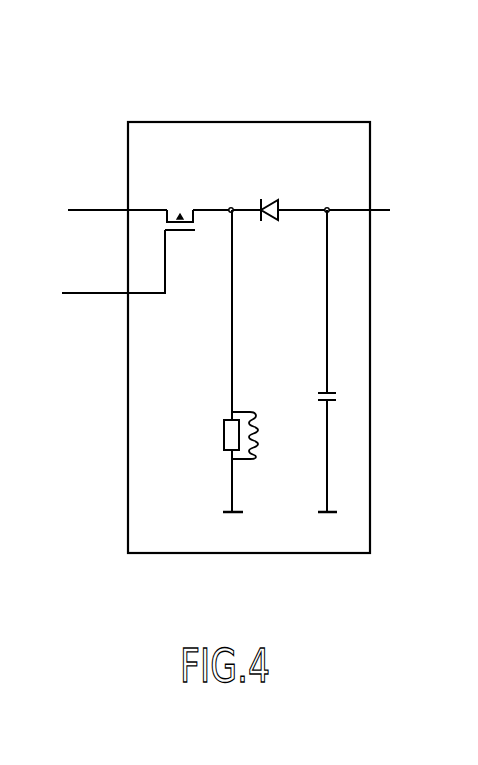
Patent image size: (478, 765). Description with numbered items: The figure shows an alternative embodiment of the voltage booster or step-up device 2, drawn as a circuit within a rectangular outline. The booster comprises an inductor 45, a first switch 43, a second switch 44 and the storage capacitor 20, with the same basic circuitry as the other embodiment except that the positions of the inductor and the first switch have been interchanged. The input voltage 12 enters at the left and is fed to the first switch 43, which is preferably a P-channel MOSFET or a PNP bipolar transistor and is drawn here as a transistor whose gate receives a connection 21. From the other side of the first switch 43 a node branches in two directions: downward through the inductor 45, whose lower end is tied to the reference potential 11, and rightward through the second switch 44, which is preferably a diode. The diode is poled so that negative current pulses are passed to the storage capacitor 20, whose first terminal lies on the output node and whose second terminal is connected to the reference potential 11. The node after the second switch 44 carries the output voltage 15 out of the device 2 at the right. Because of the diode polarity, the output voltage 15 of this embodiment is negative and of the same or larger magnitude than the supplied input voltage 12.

The voltage booster 2 is at (240, 122).
The input voltage 12 is at (90, 209).
The first switch 43 is at (187, 209).
The control line 21 is at (143, 294).
The output voltage 15 is at (348, 209).
The second switch 44 is at (277, 216).
The inductor 45 is at (224, 437).
The reference potential 11 is at (243, 513).
The storage capacitor 20 is at (318, 397).